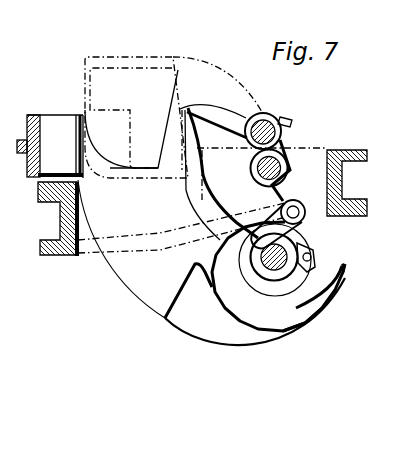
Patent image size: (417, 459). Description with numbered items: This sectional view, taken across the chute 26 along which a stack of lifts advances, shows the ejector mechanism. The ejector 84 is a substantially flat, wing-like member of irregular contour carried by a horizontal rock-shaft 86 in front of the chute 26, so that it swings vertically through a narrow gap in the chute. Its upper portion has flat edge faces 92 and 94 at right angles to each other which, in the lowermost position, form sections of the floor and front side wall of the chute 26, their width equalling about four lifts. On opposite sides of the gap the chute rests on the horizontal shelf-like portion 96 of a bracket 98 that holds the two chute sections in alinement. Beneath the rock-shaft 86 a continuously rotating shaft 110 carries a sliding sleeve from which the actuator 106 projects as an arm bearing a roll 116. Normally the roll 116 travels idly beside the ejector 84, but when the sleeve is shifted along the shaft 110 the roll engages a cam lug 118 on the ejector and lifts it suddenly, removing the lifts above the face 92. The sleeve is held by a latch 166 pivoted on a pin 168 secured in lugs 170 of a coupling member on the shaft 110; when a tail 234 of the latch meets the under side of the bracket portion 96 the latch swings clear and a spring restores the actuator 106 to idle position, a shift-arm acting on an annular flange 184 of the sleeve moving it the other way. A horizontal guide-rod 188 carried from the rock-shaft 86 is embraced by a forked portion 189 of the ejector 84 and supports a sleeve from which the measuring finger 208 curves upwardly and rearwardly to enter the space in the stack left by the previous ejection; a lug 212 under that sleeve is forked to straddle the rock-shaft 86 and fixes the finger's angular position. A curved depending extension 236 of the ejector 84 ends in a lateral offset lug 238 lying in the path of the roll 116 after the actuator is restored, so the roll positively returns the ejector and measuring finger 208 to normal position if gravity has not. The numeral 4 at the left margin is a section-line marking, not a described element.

The frame wall 4 is at (50, 137).
The chute 26 is at (106, 132).
The ejector 84 is at (145, 224).
The rock-shaft 86 is at (262, 168).
The edge face 92 is at (110, 171).
The edge face 94 is at (176, 140).
The shelf-like portion 96 is at (62, 218).
The bracket 98 is at (343, 163).
The actuator 106 is at (305, 221).
The shaft 110 is at (273, 258).
The roll 116 is at (307, 205).
The cam lug 118 is at (278, 204).
The latch 166 is at (316, 243).
The pin 168 is at (314, 256).
The lugs 170 is at (322, 289).
The annular flange 184 is at (245, 266).
The guide-rod 188 is at (266, 127).
The forked portion 189 is at (248, 129).
The measuring finger 208 is at (117, 66).
The lug 212 is at (287, 158).
The tail 234 is at (330, 268).
The curved depending extension 236 is at (254, 342).
The lug 238 is at (318, 325).